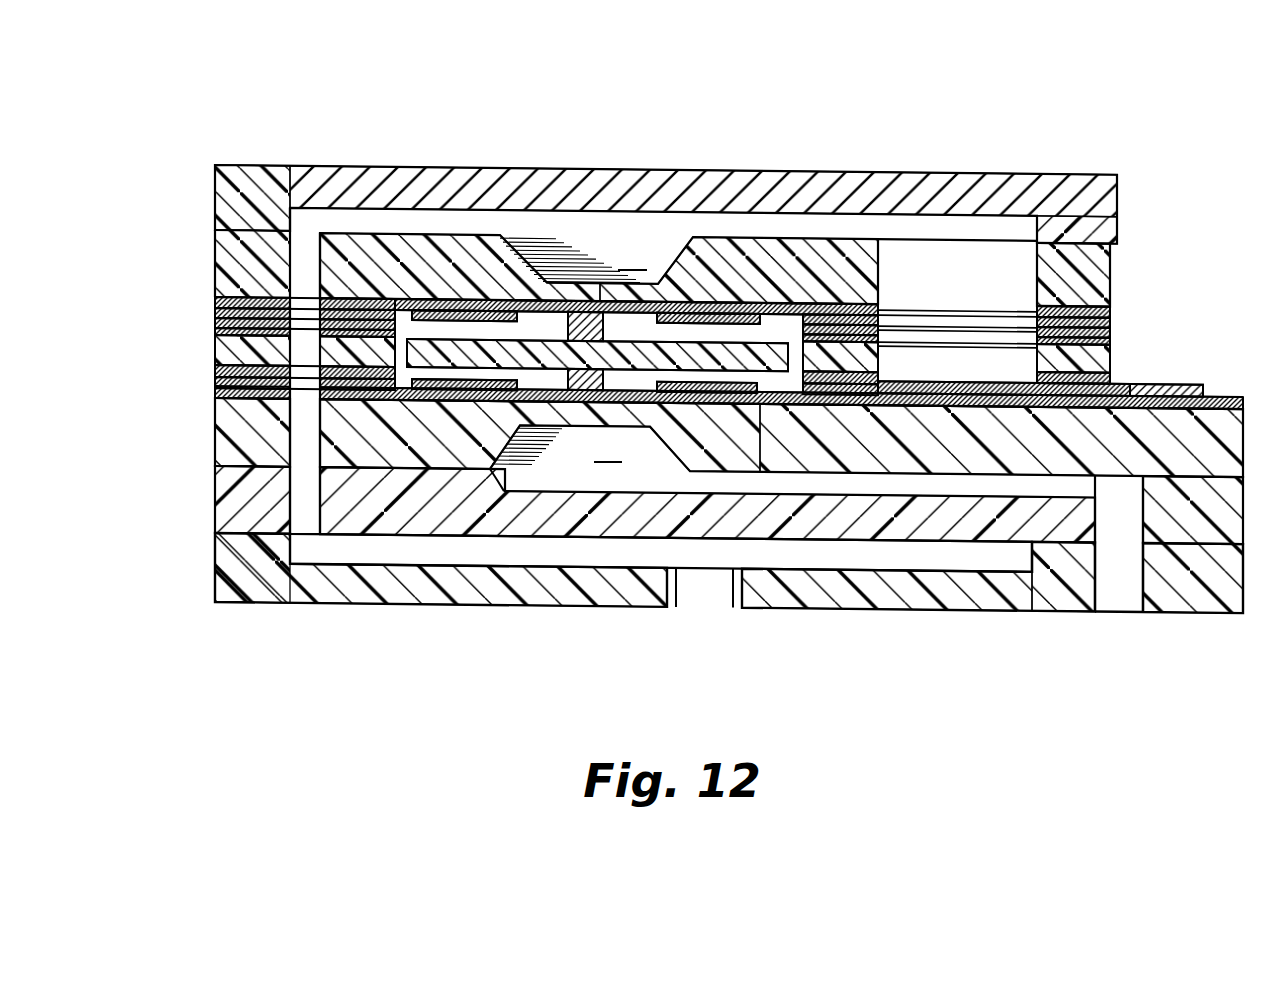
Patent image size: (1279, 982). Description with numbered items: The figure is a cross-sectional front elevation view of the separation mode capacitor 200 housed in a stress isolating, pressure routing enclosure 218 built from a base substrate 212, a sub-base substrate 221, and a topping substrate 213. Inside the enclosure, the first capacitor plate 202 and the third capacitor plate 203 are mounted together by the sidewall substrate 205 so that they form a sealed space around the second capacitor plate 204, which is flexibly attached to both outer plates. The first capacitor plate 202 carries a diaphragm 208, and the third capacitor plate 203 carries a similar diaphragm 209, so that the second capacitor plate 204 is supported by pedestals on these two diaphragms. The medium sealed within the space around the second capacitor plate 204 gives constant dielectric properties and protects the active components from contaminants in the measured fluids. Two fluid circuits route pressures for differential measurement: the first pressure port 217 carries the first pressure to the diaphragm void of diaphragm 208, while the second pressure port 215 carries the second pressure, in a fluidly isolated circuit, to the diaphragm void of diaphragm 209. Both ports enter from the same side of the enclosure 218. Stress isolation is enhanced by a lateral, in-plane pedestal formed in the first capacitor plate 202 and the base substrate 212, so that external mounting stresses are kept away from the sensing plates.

The capacitor 200 is at (231, 106).
The topping substrate 213 is at (355, 163).
The third capacitor plate 203 is at (215, 278).
The diaphragm 209 is at (560, 297).
The second capacitor plate 204 is at (712, 357).
The sidewall substrate 205 is at (215, 351).
The first capacitor plate 202 is at (215, 441).
The diaphragm 208 is at (547, 415).
The base substrate 212 is at (215, 499).
The enclosure 218 is at (215, 577).
The sub-base substrate 221 is at (287, 605).
The second pressure port 215 is at (705, 600).
The first pressure port 217 is at (1115, 606).